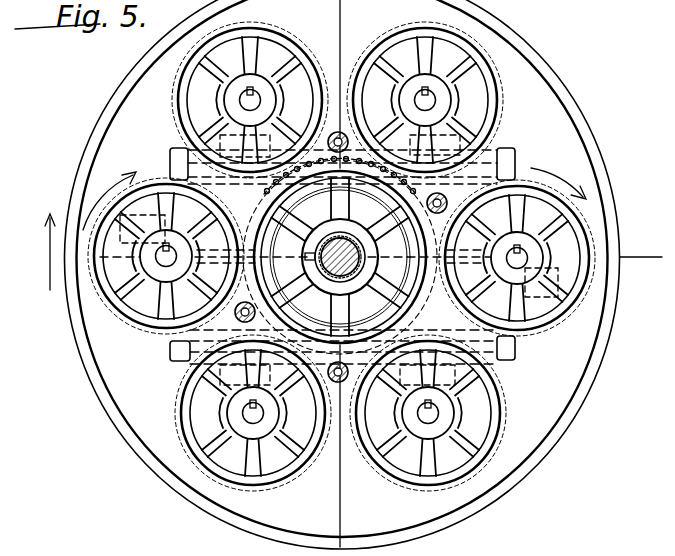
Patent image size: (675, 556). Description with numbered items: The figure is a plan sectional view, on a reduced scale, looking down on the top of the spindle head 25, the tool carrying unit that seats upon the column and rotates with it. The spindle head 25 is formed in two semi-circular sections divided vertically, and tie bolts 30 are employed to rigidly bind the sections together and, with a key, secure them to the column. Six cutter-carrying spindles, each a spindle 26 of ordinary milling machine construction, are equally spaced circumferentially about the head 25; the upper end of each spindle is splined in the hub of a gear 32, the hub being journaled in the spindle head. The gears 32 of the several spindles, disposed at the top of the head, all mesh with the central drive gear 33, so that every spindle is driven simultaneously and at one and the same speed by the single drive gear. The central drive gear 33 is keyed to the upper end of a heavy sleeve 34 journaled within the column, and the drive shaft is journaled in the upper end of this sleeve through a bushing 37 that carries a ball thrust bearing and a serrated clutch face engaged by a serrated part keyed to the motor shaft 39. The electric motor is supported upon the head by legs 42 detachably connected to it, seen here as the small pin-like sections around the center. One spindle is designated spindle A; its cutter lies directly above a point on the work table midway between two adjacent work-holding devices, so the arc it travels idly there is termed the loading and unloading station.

The spindle head 25 is at (606, 355).
The spindle 26 is at (520, 250).
The tie bolts 30 is at (515, 163).
The gear 32 is at (183, 132).
The central drive gear 33 is at (268, 182).
The sleeve 34 is at (326, 278).
The bushing 37 is at (282, 182).
The shaft 39 is at (355, 240).
The legs 42 is at (236, 311).
The spindle A is at (520, 258).